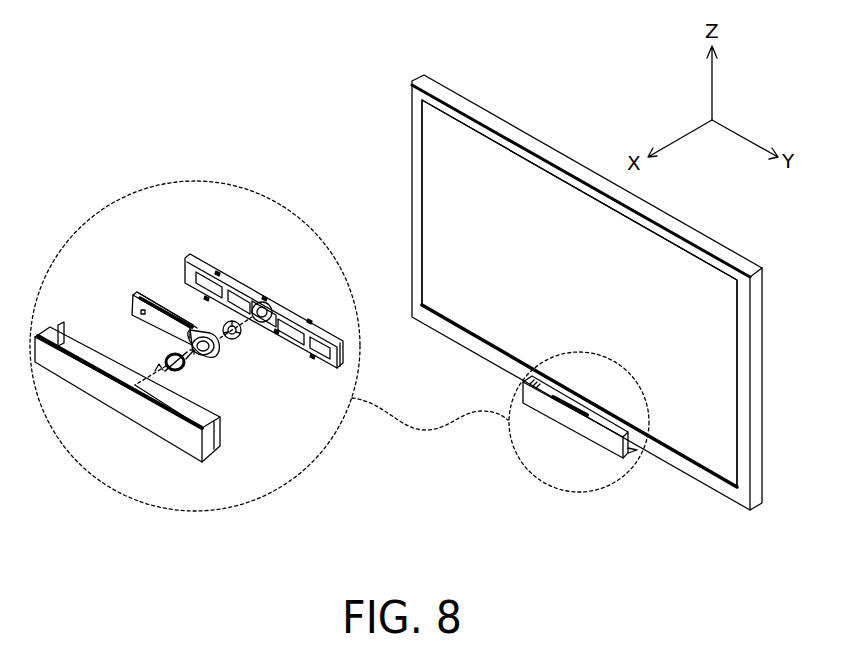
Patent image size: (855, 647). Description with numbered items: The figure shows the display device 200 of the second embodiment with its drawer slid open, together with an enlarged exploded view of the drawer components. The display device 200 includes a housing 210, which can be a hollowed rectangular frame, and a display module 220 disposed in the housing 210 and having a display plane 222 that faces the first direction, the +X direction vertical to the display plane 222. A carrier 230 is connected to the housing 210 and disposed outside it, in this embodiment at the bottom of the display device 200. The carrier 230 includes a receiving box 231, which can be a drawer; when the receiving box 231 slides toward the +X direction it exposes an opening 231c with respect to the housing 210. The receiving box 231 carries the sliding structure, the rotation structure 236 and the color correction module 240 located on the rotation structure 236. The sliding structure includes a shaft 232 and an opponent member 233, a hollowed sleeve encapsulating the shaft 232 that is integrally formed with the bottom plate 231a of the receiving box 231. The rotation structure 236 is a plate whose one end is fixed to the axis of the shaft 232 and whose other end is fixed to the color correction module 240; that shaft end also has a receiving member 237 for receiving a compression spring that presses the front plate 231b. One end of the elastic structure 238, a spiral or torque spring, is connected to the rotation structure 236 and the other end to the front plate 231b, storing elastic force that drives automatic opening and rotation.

The display device 200 is at (355, 51).
The housing 210 is at (545, 143).
The display module 220 is at (477, 155).
The display plane 222 is at (605, 306).
The carrier 230 is at (606, 471).
The receiving box 231 is at (563, 417).
The bottom plate 231a is at (247, 280).
The front plate 231b is at (131, 405).
The opening 231c is at (525, 381).
The shaft 232 is at (240, 337).
The opponent member 233 is at (262, 301).
The rotation structure 236 is at (158, 320).
The receiving member 237 is at (215, 352).
The elastic structure 238 is at (180, 371).
The color correction module 240 is at (145, 291).